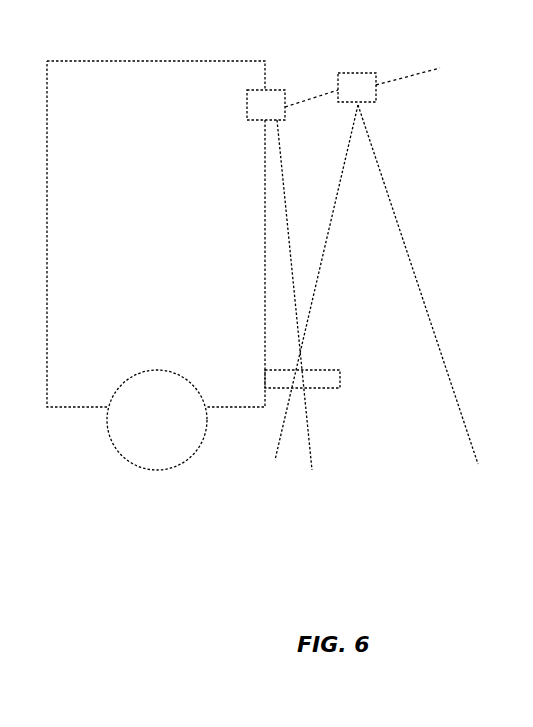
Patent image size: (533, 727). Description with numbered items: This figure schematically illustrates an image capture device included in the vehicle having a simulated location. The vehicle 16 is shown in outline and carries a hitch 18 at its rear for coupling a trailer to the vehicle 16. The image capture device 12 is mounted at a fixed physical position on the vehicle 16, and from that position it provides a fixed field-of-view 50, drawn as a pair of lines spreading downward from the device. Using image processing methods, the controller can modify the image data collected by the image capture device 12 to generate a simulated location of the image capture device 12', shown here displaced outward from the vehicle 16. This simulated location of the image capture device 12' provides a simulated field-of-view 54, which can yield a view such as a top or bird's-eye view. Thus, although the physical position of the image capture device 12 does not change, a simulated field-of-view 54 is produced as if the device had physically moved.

The vehicle 16 is at (175, 58).
The image capture device 12 is at (292, 265).
The simulated location of the image capture device 12' is at (376, 241).
The hitch 18 is at (325, 390).
The fixed field-of-view 50 is at (420, 142).
The simulated field-of-view 54 is at (383, 481).